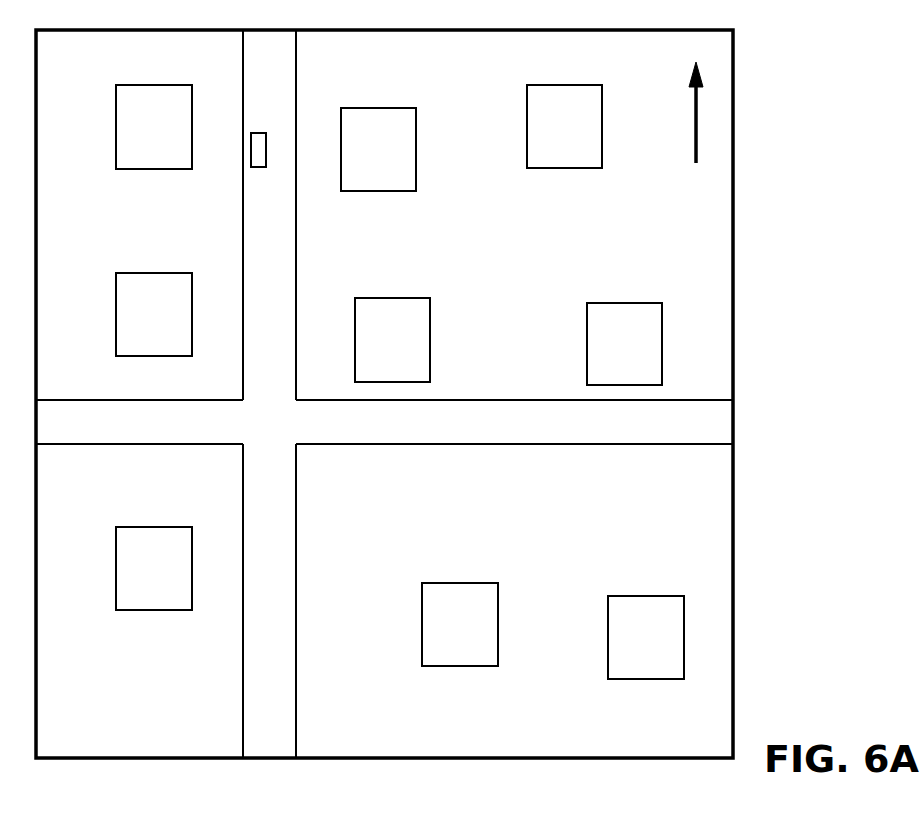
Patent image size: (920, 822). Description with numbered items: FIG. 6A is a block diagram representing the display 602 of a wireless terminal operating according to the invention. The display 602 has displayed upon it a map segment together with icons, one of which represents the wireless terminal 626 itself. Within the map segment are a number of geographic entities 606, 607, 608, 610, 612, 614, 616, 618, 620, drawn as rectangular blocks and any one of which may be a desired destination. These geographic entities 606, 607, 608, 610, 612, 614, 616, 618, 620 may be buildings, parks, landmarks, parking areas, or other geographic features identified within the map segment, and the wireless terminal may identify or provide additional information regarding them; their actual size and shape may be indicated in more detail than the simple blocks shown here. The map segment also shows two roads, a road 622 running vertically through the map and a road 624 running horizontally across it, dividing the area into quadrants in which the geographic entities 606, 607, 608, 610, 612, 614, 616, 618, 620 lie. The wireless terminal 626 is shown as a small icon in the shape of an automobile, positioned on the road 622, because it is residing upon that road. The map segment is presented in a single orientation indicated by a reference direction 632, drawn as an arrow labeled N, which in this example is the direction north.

The display 602 is at (655, 29).
The geographic entity 606 is at (137, 137).
The geographic entity 607 is at (361, 159).
The geographic entity 608 is at (547, 137).
The geographic entity 610 is at (137, 324).
The geographic entity 612 is at (375, 351).
The geographic entity 614 is at (607, 354).
The geographic entity 616 is at (137, 578).
The geographic entity 618 is at (443, 634).
The geographic entity 620 is at (630, 649).
The road 622 is at (296, 527).
The road 624 is at (475, 400).
The wireless terminal 626 is at (258, 133).
The reference direction 632 is at (696, 160).